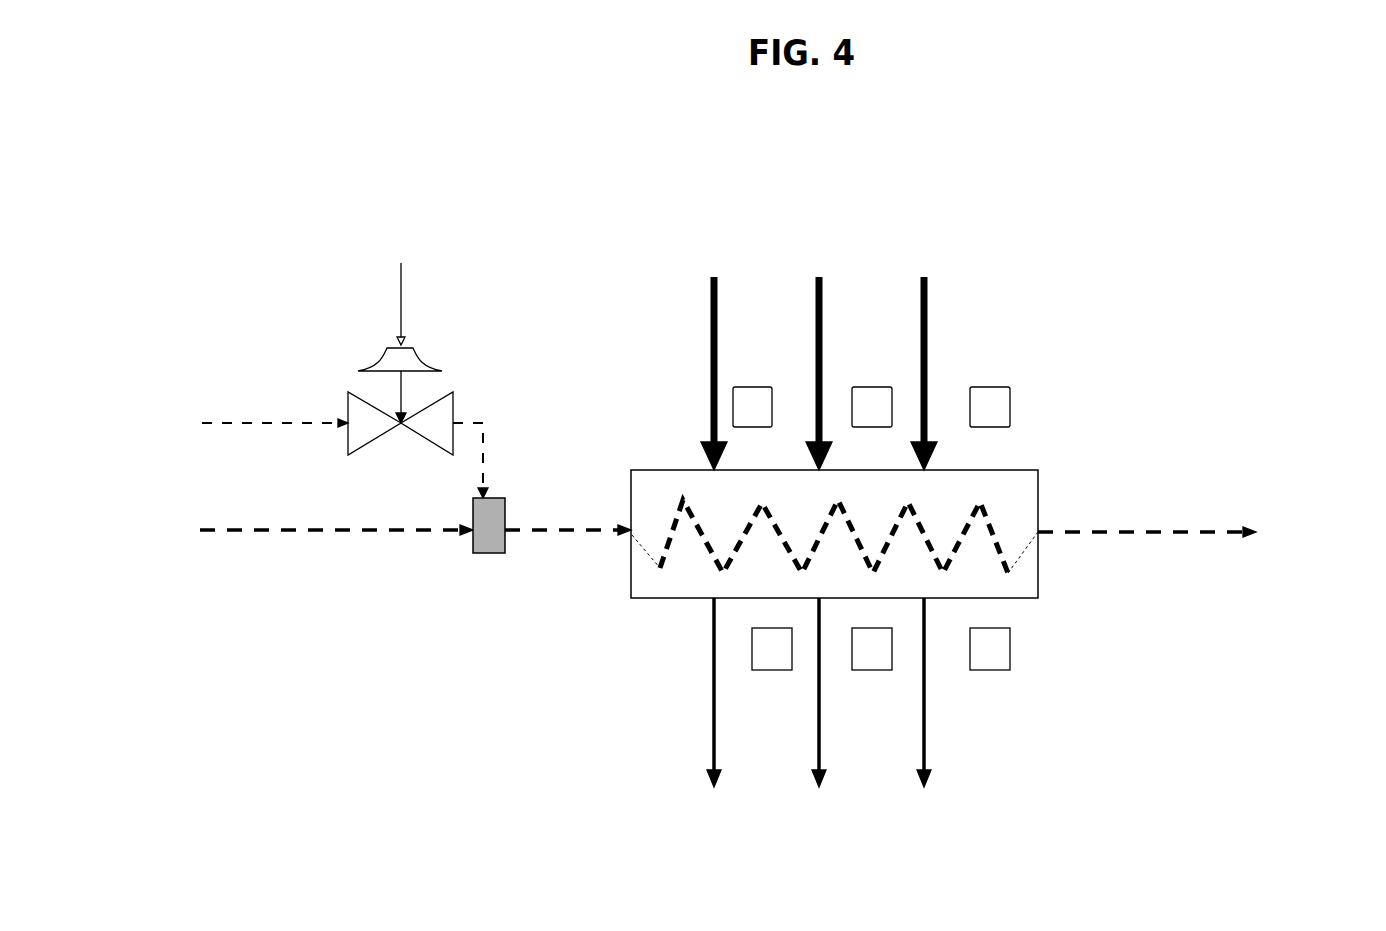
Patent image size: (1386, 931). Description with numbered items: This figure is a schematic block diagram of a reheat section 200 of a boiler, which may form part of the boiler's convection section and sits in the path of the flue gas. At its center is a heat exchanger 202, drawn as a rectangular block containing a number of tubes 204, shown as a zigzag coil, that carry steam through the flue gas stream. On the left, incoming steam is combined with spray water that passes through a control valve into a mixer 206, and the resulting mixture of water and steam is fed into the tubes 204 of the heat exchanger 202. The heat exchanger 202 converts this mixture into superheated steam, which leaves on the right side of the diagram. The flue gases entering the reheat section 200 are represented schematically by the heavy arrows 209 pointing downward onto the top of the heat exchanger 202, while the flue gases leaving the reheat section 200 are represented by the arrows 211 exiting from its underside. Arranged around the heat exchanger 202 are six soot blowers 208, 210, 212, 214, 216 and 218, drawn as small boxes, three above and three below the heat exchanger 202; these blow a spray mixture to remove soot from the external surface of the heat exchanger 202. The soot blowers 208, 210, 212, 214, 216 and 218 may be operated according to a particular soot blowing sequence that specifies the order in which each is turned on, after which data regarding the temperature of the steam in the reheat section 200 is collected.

The reheat section 200 is at (1191, 258).
The heat exchanger 202 is at (610, 614).
The tubes 204 is at (999, 522).
The mixer 206 is at (465, 556).
The soot blower 208 is at (748, 372).
The arrows 209 is at (710, 330).
The soot blower 210 is at (868, 372).
The arrows 211 is at (712, 730).
The soot blower 212 is at (996, 372).
The soot blower 214 is at (766, 682).
The soot blower 216 is at (864, 683).
The soot blower 218 is at (997, 684).